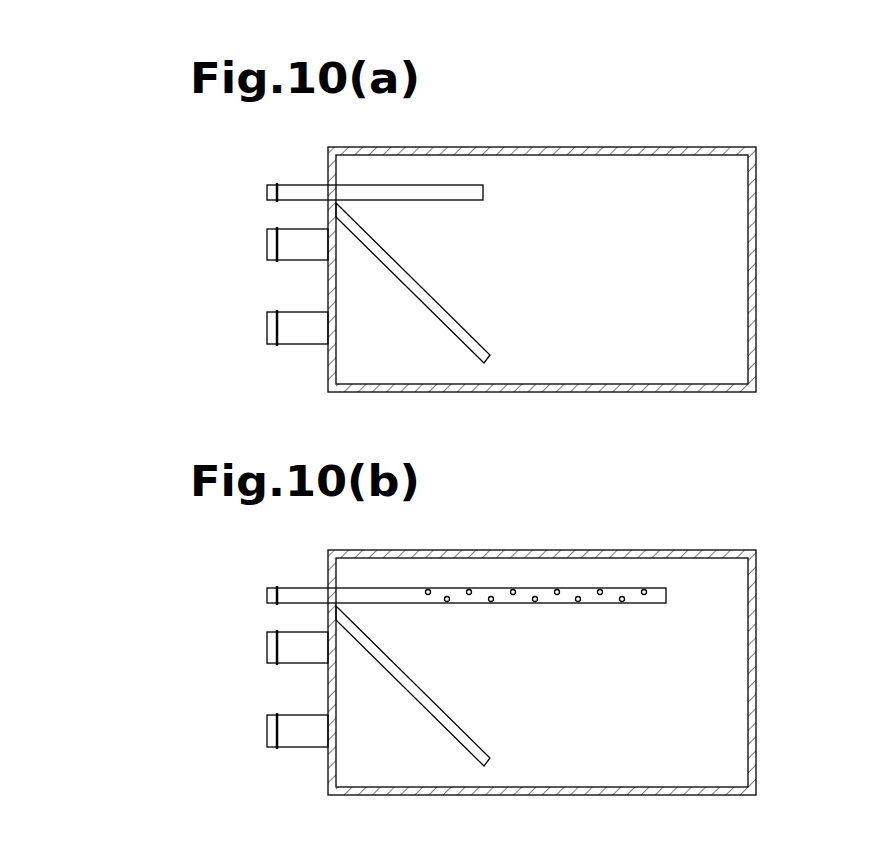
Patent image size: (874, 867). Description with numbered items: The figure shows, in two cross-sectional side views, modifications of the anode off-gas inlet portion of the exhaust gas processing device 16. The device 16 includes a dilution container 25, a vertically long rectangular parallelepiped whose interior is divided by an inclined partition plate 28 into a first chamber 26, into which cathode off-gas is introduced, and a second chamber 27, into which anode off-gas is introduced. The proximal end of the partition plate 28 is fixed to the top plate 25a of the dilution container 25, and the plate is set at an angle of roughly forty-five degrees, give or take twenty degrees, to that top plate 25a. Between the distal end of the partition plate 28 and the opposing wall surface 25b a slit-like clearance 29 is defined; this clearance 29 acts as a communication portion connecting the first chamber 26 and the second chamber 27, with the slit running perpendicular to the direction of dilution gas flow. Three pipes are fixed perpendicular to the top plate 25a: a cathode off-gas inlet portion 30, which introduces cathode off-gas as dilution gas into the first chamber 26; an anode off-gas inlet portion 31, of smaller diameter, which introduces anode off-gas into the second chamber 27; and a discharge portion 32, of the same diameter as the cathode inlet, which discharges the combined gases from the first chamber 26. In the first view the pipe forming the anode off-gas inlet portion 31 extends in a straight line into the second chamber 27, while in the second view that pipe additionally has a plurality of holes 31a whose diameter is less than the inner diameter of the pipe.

In FIG. 10A, the exhaust gas processing device 16 is at (774, 152).
In FIG. 10B, the exhaust gas processing device 16 is at (547, 671).
In FIG. 10A, the dilution container 25 is at (778, 242).
In FIG. 10B, the dilution container 25 is at (547, 671).
In FIG. 10A, the top plate 25a is at (332, 367).
In FIG. 10B, the top plate 25a is at (298, 687).
In FIG. 10A, the wall surface 25b is at (667, 381).
In FIG. 10B, the wall surface 25b is at (654, 801).
In FIG. 10A, the first chamber 26 is at (415, 372).
In FIG. 10B, the first chamber 26 is at (403, 807).
In FIG. 10A, the second chamber 27 is at (607, 162).
In FIG. 10B, the second chamber 27 is at (542, 534).
In FIG. 10A, the partition plate 28 is at (435, 298).
In FIG. 10B, the partition plate 28 is at (413, 686).
In FIG. 10A, the clearance 29 is at (490, 370).
In FIG. 10B, the clearance 29 is at (515, 806).
In FIG. 10A, the cathode off-gas inlet portion 30 is at (307, 252).
In FIG. 10B, the cathode off-gas inlet portion 30 is at (297, 670).
In FIG. 10A, the anode off-gas inlet portion 31 is at (295, 192).
In FIG. 10B, the anode off-gas inlet portion 31 is at (466, 597).
In FIG. 10B, the holes 31a is at (536, 623).
In FIG. 10A, the discharge portion 32 is at (303, 333).
In FIG. 10B, the discharge portion 32 is at (294, 746).